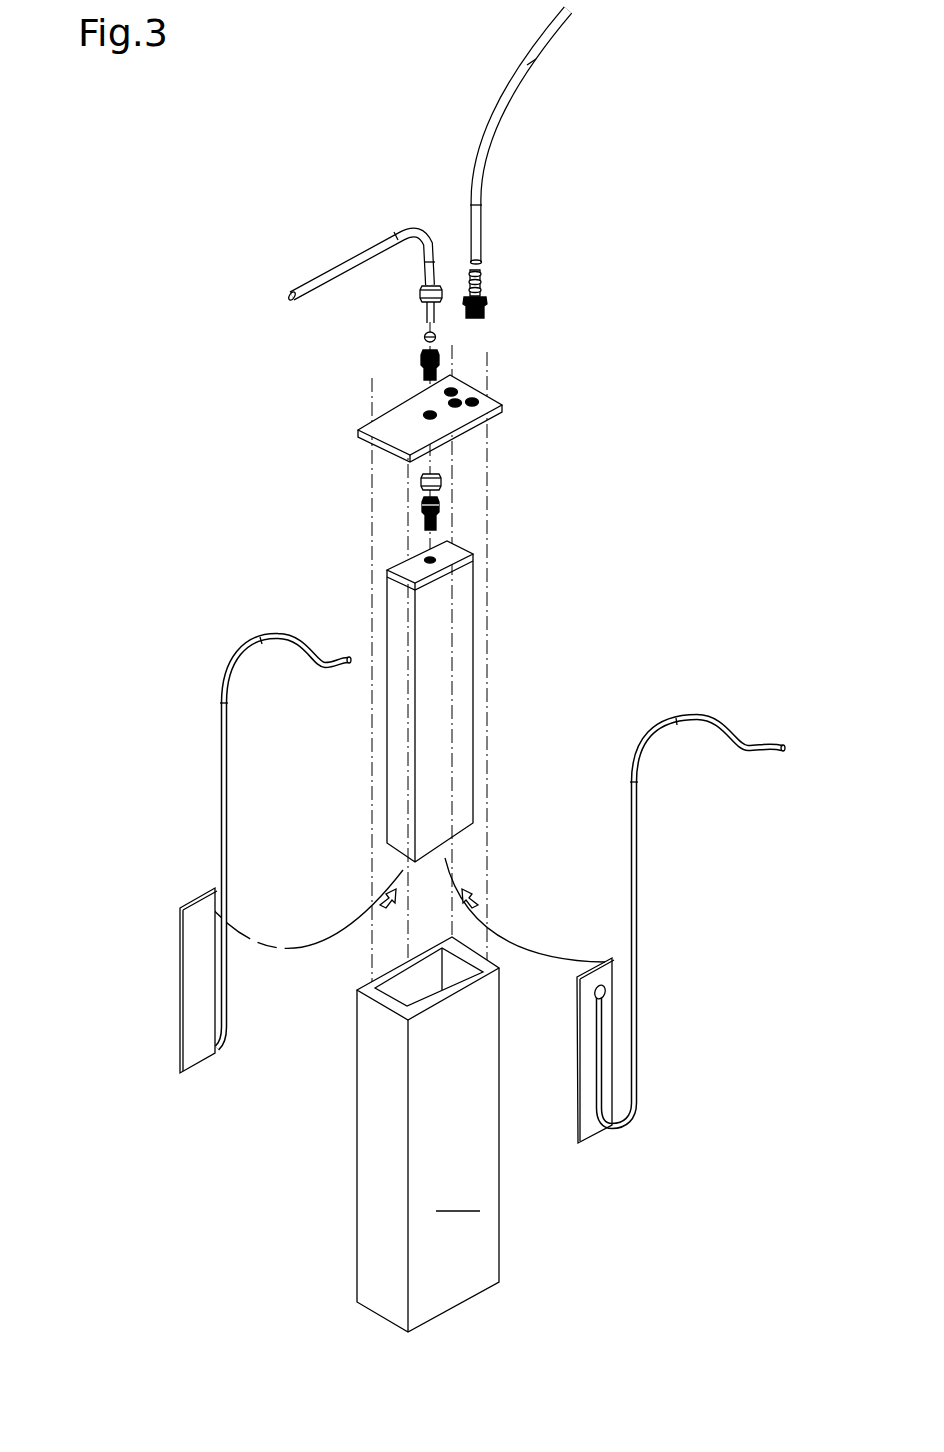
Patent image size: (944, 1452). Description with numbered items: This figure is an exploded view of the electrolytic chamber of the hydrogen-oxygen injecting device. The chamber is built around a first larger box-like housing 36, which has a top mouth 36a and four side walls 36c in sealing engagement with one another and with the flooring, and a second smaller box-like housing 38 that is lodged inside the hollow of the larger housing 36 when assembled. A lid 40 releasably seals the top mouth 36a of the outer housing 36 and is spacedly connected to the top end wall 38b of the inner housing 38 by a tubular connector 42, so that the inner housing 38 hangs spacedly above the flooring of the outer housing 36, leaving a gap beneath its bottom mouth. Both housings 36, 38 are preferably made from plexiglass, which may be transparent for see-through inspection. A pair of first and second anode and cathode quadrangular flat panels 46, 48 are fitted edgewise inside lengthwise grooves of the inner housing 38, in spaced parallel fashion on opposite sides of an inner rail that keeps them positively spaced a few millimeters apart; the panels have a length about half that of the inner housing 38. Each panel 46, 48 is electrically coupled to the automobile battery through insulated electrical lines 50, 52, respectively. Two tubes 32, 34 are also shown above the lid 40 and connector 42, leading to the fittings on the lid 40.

The sample tube 32 is at (525, 64).
The drain tube 34 is at (340, 268).
The lid 40 is at (485, 423).
The tubular connector 42 is at (441, 505).
The second smaller box-like housing 38 is at (529, 699).
The top end wall 38b is at (455, 550).
The first larger box-like housing 36 is at (349, 1134).
The top mouth 36a is at (388, 988).
The side walls 36c is at (380, 1272).
The first anode quadrangular flat panel 46 is at (188, 973).
The second cathode quadrangular flat panel 48 is at (583, 1095).
The insulated electrical line 50 is at (223, 775).
The insulated electrical line 52 is at (633, 832).